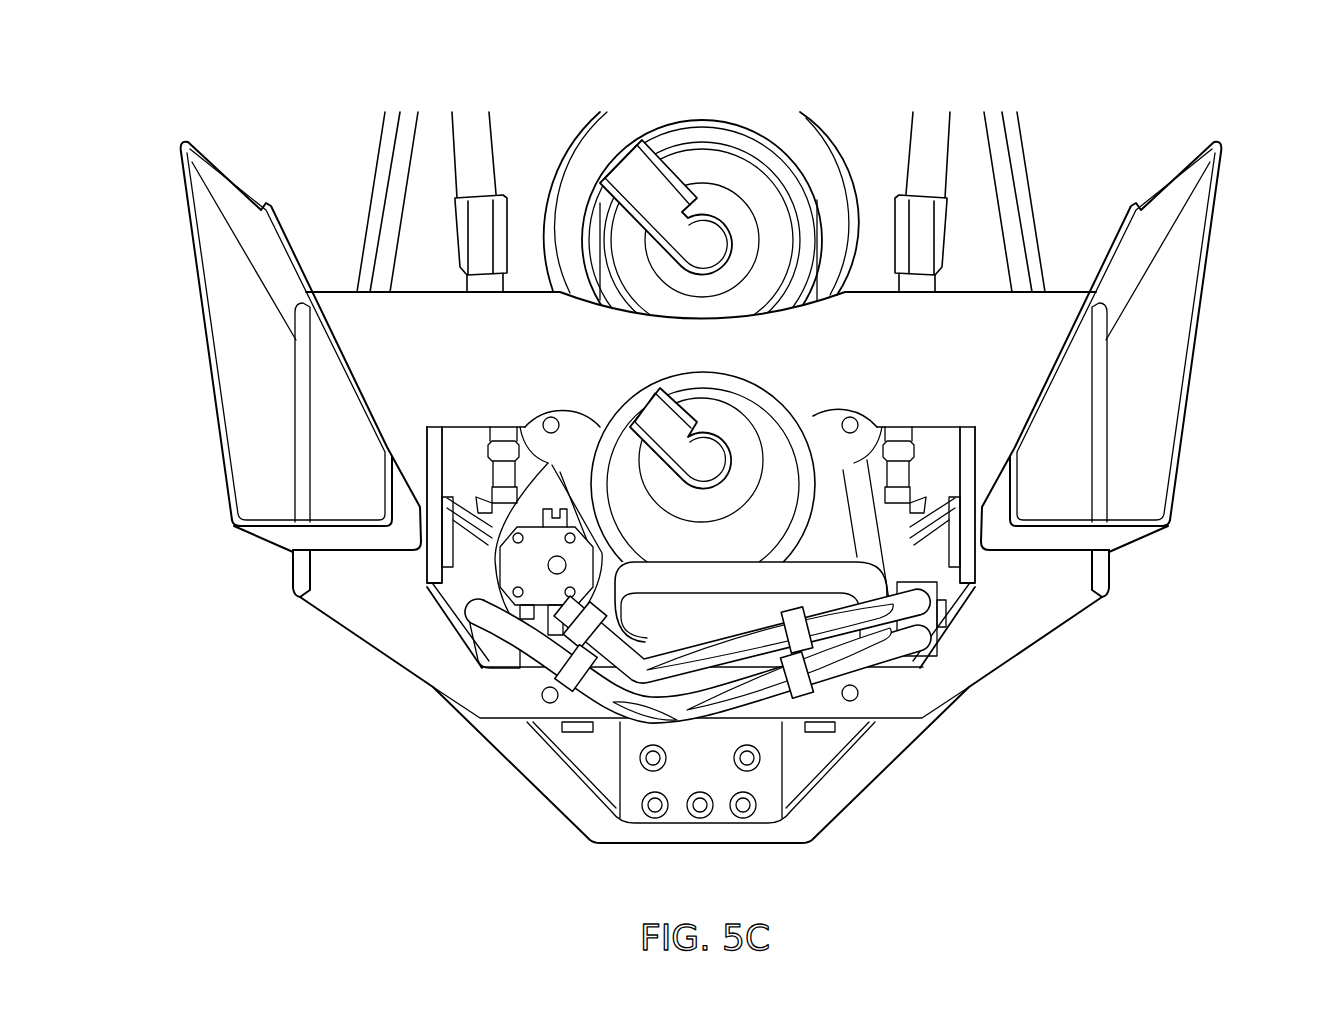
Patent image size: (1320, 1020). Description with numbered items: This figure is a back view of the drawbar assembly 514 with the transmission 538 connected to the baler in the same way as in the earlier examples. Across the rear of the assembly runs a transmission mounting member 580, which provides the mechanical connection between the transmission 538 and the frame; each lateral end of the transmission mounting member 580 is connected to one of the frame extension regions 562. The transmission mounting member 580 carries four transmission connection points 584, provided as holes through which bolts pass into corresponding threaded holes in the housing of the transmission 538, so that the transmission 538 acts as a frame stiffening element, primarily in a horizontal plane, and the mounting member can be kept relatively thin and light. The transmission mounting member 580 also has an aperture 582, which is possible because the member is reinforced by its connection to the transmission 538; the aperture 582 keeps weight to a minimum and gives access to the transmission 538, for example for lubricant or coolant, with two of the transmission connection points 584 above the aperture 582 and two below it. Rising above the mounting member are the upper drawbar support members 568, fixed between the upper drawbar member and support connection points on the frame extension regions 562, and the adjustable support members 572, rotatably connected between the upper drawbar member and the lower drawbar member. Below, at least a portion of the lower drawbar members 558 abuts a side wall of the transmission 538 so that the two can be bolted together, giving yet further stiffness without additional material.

The drawbar assembly 514 is at (395, 748).
The transmission 538 is at (826, 138).
The lower drawbar members 558 is at (570, 794).
The frame extension regions 562 is at (216, 418).
The upper drawbar support member 568 is at (380, 137).
The adjustable support member 572 is at (491, 137).
The transmission mounting member 580 is at (1018, 624).
The aperture 582 is at (941, 454).
The transmission connection points 584 is at (549, 416).